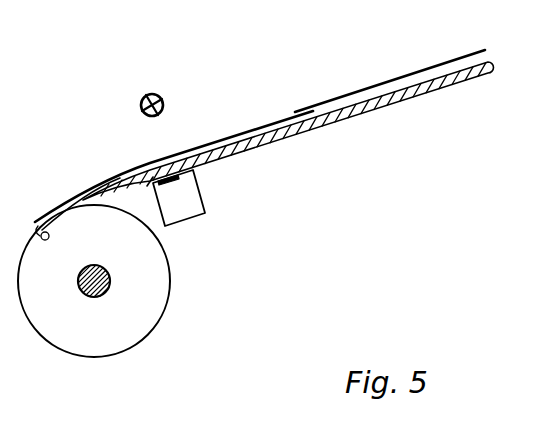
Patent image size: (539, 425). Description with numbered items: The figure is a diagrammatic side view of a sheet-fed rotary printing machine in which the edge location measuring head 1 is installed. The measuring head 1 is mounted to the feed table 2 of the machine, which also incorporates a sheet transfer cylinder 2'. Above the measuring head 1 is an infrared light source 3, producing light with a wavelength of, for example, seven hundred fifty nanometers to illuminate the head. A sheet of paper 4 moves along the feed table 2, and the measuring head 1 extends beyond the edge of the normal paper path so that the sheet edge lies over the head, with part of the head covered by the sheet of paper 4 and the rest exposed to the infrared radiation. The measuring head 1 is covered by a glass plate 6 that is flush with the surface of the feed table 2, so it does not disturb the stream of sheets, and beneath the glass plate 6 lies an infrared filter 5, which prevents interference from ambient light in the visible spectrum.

The edge location measuring head 1 is at (187, 212).
The feed table 2 is at (288, 131).
The sheet transfer cylinder 2' is at (111, 281).
The infrared light source 3 is at (160, 96).
The sheet of paper 4 is at (283, 118).
The infrared filter 5 is at (180, 178).
The glass plate 6 is at (147, 186).